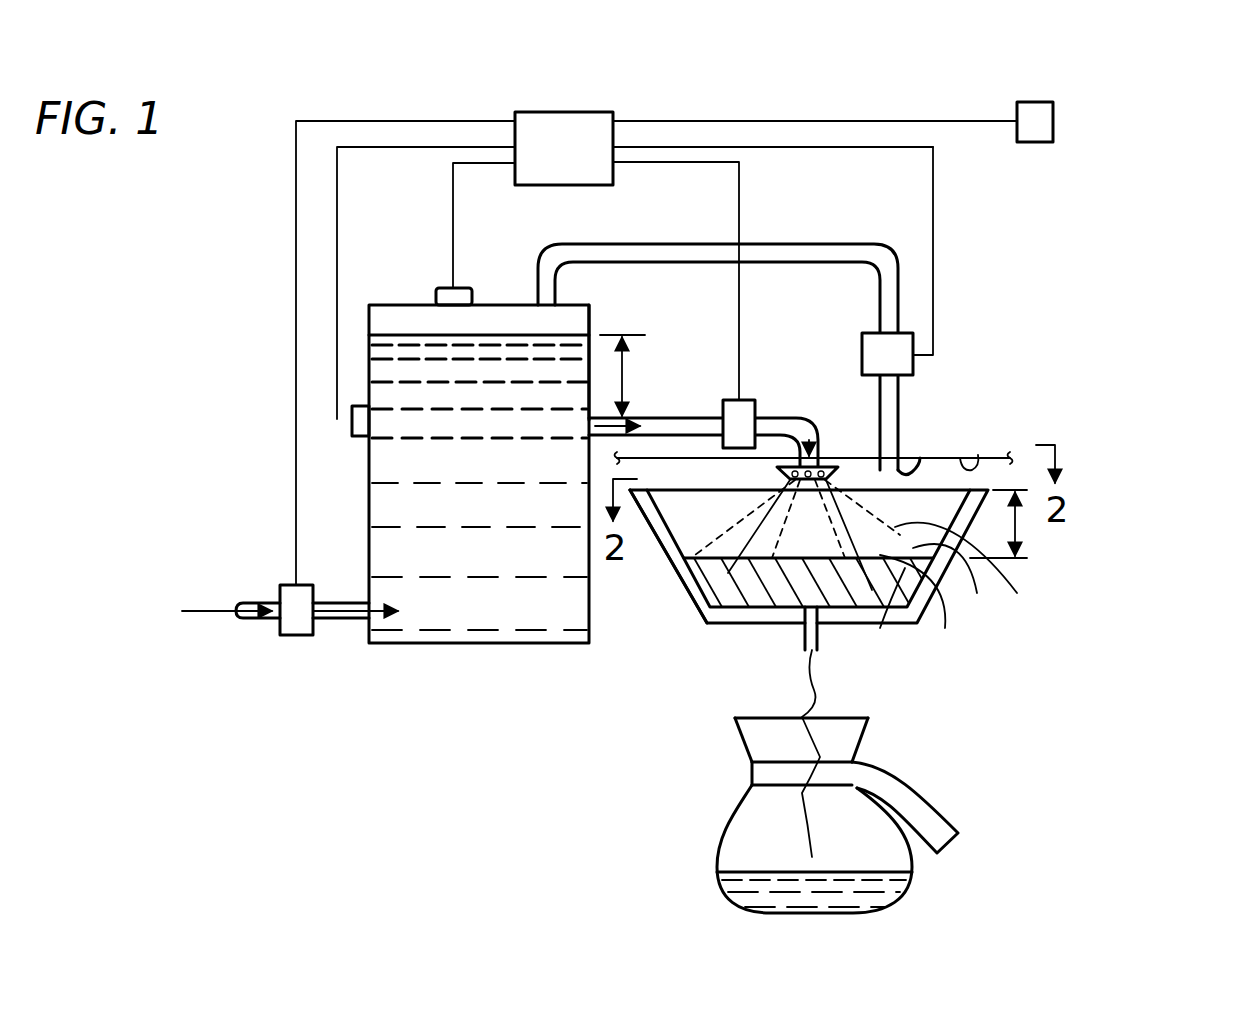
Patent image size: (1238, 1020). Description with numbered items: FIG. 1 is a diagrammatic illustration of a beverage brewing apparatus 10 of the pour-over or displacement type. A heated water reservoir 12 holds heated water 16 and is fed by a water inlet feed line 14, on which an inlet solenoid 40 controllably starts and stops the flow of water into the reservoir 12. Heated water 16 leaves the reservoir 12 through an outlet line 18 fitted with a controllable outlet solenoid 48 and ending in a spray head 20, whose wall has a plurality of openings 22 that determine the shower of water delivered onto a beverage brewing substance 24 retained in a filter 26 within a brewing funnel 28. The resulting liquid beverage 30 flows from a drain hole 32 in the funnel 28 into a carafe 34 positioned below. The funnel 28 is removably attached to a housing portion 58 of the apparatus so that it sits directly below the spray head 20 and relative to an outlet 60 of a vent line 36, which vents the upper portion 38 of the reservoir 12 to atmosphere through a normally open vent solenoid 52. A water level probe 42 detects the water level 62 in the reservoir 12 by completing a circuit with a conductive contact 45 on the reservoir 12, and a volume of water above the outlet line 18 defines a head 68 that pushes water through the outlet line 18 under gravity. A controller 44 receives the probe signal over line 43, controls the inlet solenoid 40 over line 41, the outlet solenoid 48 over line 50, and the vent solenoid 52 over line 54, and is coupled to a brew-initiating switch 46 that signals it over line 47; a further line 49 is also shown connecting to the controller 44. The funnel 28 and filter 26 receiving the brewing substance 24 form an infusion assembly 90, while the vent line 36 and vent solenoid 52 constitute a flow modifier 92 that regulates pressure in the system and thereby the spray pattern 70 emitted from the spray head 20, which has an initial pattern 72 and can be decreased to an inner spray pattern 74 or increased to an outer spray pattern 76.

The beverage brewing apparatus 10 is at (1092, 218).
The heated water reservoir 12 is at (508, 646).
The water inlet feed line 14 is at (250, 622).
The heated water 16 is at (455, 605).
The outlet line 18 is at (777, 415).
The spray head 20 is at (772, 472).
The openings 22 is at (810, 485).
The beverage brewing substance 24 is at (755, 598).
The filter 26 is at (680, 602).
The brewing funnel 28 is at (697, 605).
The liquid beverage 30 is at (800, 700).
The drain hole 32 is at (817, 640).
The carafe 34 is at (718, 840).
The vent line 36 is at (840, 243).
The upper portion 38 is at (583, 318).
The inlet solenoid 40 is at (296, 640).
The line 41 is at (296, 450).
The water level probe 42 is at (436, 296).
The line 43 is at (453, 200).
The controller 44 is at (560, 112).
The conductive contact 45 is at (355, 440).
The switch 46 is at (1053, 118).
The line 47 is at (965, 122).
The outlet solenoid 48 is at (718, 408).
The control line 49 is at (337, 250).
The line 50 is at (740, 200).
The vent solenoid 52 is at (862, 345).
The line 54 is at (933, 292).
The housing portion 58 is at (978, 455).
The outlet 60 is at (920, 456).
The water level 62 is at (492, 335).
The head of water 68 is at (627, 385).
The spray pattern 70 is at (968, 574).
The initial pattern 72 is at (922, 609).
The inner spray pattern 74 is at (885, 614).
The outer spray pattern 76 is at (953, 585).
The infusion assembly 90 is at (1102, 533).
The flow modifier 92 is at (988, 352).